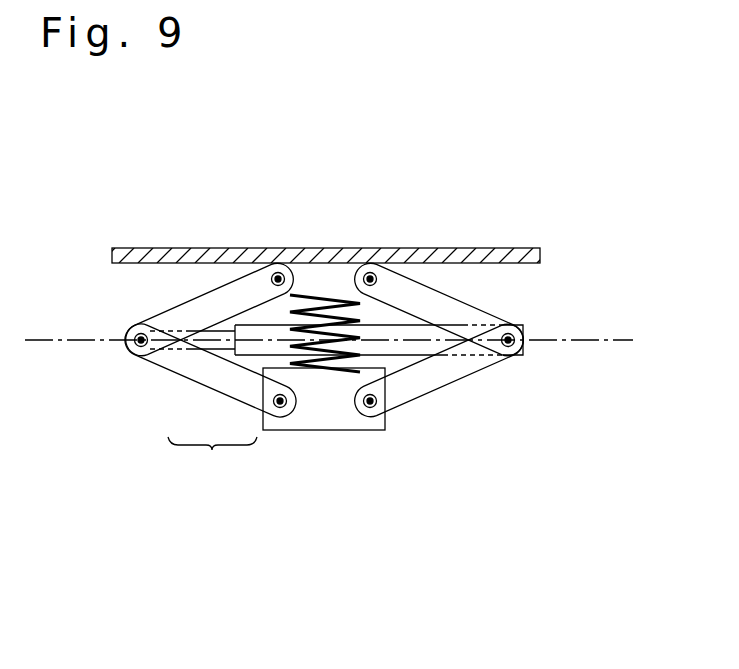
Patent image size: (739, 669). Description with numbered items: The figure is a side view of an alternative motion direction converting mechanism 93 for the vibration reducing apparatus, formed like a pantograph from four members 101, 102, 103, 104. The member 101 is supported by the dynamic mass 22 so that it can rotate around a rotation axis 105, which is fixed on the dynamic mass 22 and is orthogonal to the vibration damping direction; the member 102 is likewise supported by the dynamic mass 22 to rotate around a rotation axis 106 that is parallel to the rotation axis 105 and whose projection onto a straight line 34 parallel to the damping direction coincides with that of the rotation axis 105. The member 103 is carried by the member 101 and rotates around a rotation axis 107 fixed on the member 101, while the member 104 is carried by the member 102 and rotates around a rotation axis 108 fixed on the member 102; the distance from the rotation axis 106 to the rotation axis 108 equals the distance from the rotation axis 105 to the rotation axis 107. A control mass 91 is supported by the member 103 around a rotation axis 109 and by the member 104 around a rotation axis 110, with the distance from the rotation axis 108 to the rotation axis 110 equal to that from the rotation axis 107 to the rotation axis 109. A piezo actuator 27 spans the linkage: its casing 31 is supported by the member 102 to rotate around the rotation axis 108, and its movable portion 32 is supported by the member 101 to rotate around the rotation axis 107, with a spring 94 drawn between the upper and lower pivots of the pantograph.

The dynamic mass 22 is at (520, 250).
The piezo actuator 27 is at (212, 456).
The casing 31 is at (256, 350).
The movable portion 32 is at (220, 345).
The axis 34 is at (600, 340).
The control mass 91 is at (270, 432).
The motion direction converting mechanism 93 is at (520, 393).
The spring 94 is at (332, 302).
The member 101 is at (218, 295).
The member 102 is at (428, 293).
The member 103 is at (155, 362).
The member 104 is at (432, 385).
The rotation axis 105 is at (276, 272).
The rotation axis 106 is at (369, 272).
The rotation axis 107 is at (138, 333).
The rotation axis 108 is at (511, 332).
The rotation axis 109 is at (282, 408).
The rotation axis 110 is at (369, 408).